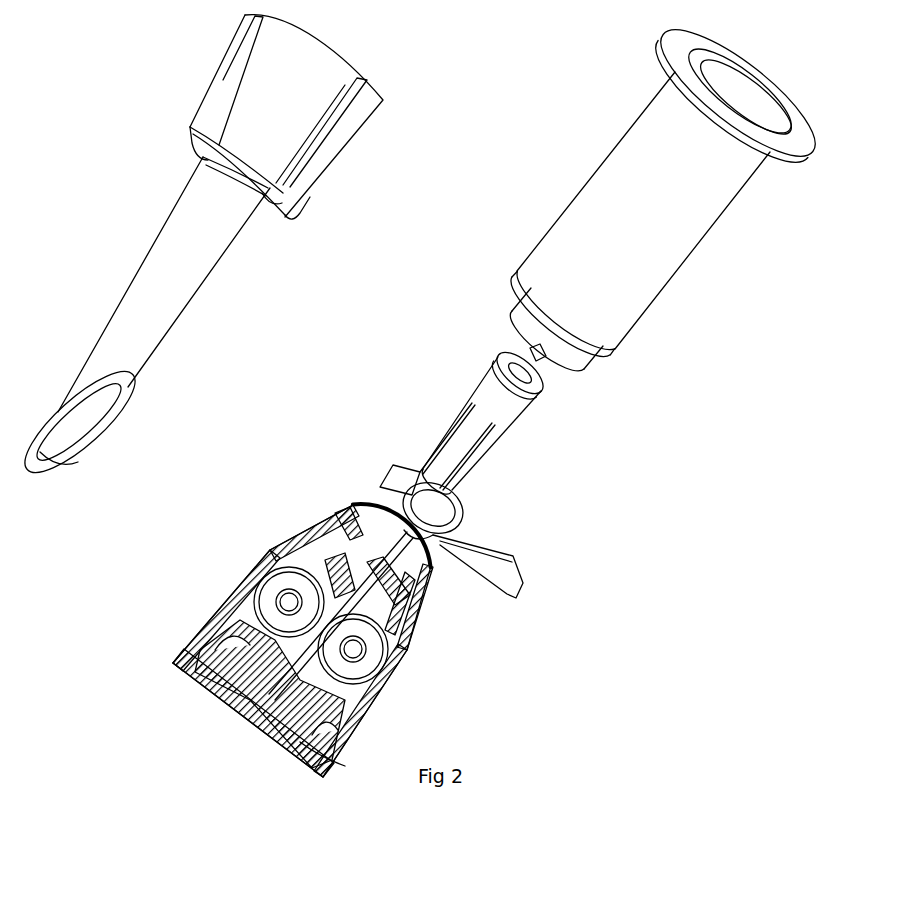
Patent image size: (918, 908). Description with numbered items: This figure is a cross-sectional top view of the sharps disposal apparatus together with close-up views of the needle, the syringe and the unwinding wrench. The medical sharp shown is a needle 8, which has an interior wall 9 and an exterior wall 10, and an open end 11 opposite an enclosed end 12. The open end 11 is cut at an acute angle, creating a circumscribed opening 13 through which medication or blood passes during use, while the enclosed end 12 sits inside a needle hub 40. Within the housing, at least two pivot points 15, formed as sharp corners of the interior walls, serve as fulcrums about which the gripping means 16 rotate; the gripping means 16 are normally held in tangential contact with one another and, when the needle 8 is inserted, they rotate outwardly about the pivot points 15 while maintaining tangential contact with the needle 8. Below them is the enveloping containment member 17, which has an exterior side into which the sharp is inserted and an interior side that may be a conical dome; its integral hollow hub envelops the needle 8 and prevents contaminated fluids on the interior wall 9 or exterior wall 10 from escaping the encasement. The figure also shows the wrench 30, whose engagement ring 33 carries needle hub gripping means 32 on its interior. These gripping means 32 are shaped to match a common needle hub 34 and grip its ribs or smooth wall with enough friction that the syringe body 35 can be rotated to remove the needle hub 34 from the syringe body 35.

The needle 8 is at (377, 550).
The interior wall 9 is at (62, 422).
The exterior wall 10 is at (122, 413).
The open end 11 is at (75, 397).
The enclosed end 12 is at (193, 159).
The circumscribed opening 13 is at (55, 445).
The pivot points 15 is at (410, 645).
The gripping means 16 is at (400, 673).
The enveloping containment member 17 is at (353, 740).
The wrench 30 is at (518, 562).
The needle hub gripping means 32 is at (407, 470).
The engagement ring 33 is at (460, 507).
The needle hub 34 is at (310, 197).
The syringe body 35 is at (688, 267).
The needle hub 40 is at (368, 100).